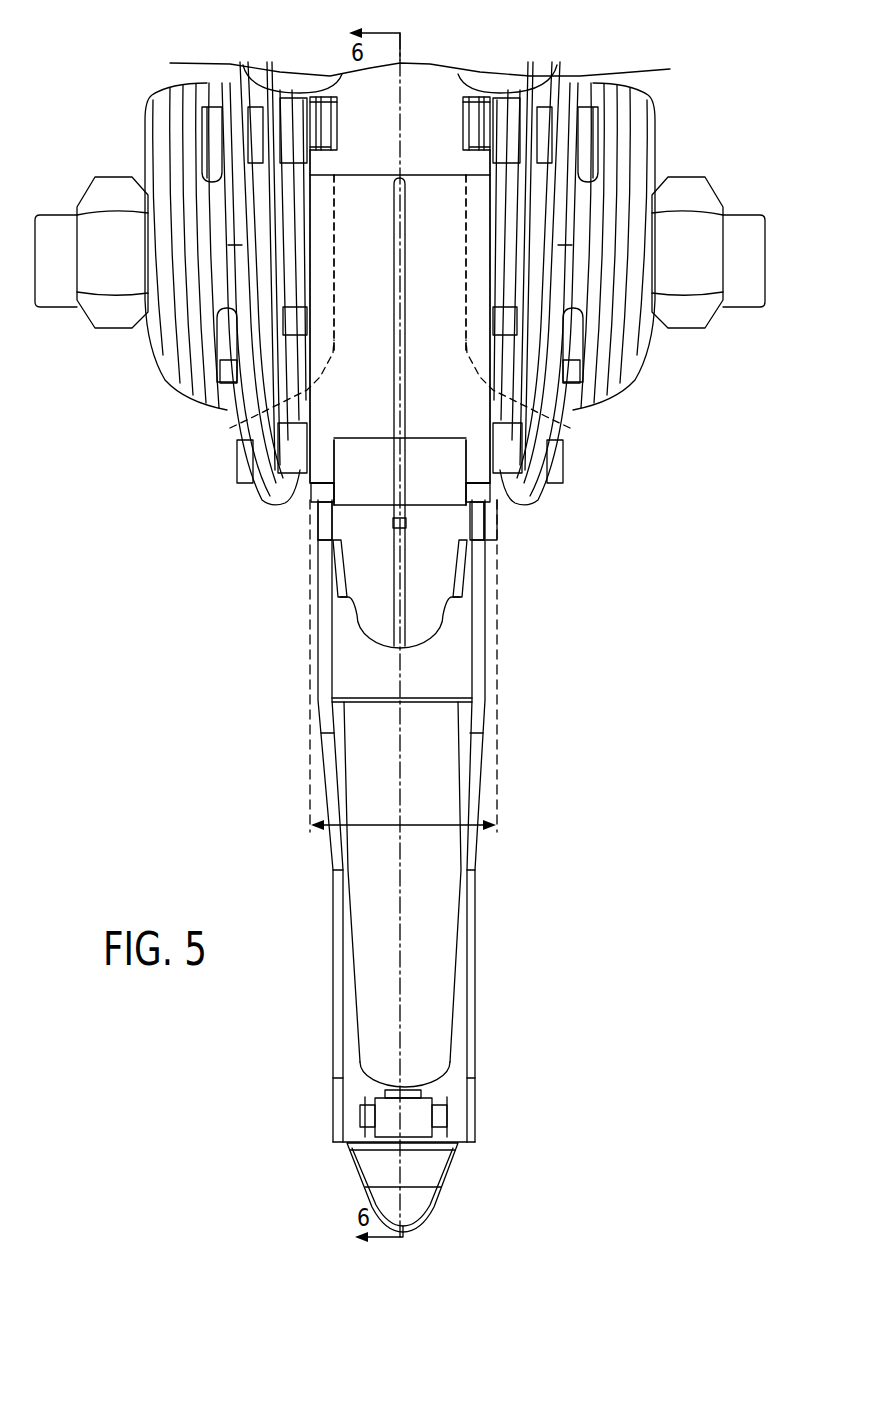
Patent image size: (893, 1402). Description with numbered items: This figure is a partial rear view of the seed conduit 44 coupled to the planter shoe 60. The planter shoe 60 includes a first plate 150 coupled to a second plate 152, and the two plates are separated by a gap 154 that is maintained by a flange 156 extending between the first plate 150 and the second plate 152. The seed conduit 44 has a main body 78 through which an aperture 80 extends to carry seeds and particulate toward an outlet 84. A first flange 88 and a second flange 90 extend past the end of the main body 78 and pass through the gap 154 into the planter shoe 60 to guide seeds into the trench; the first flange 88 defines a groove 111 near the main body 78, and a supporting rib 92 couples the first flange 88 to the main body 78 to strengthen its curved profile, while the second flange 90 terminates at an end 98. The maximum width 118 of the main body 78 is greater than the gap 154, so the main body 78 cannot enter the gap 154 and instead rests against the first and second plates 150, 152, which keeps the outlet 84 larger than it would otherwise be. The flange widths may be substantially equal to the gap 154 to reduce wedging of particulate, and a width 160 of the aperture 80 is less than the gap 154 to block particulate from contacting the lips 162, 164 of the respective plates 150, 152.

The seed conduit 44 is at (104, 622).
The planter shoe 60 is at (627, 838).
The main body 78 is at (342, 227).
The aperture 80 is at (230, 428).
The outlet 84 is at (490, 488).
The first flange 88 is at (367, 567).
The second flange 90 is at (393, 998).
The supporting rib 92 is at (407, 345).
The end of second flange 98 is at (430, 1083).
The groove 111 is at (333, 517).
The maximum width of second end 118 is at (375, 828).
The first plate 150 is at (332, 975).
The second plate 152 is at (477, 910).
The gap 154 is at (368, 505).
The flange 156 is at (450, 662).
The width of aperture 160 is at (393, 438).
The lip of first plate 162 is at (318, 493).
The lip of second plate 164 is at (497, 500).